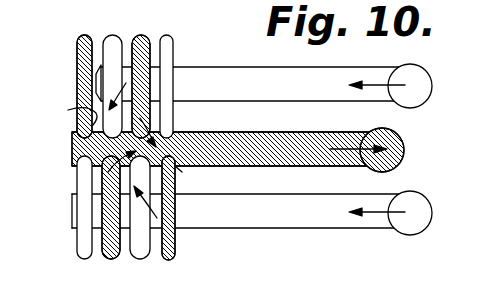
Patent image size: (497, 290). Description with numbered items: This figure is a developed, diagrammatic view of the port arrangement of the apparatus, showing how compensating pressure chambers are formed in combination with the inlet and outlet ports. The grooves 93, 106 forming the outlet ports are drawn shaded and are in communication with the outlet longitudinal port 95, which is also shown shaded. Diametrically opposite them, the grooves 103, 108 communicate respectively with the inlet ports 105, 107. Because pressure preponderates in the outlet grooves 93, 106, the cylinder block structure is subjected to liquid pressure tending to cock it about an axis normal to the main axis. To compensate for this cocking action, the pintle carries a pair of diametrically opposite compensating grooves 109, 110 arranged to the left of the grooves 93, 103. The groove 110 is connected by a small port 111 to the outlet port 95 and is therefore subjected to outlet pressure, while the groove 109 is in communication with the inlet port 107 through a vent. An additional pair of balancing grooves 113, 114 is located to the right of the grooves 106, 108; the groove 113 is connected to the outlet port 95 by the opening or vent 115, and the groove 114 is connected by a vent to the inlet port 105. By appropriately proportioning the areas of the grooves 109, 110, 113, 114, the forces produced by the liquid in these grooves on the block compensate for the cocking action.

The outlet longitudinal port 95 is at (284, 132).
The inlet port 105 is at (204, 70).
The inlet port 107 is at (268, 229).
The compensating groove 110 is at (83, 34).
The groove 103 is at (112, 37).
The groove 106 is at (144, 36).
The balancing groove 114 is at (170, 38).
The small port 111 is at (68, 114).
The compensating groove 109 is at (78, 256).
The groove 93 is at (108, 256).
The groove 108 is at (141, 256).
The balancing groove 113 is at (170, 258).
The opening or vent 115 is at (182, 170).